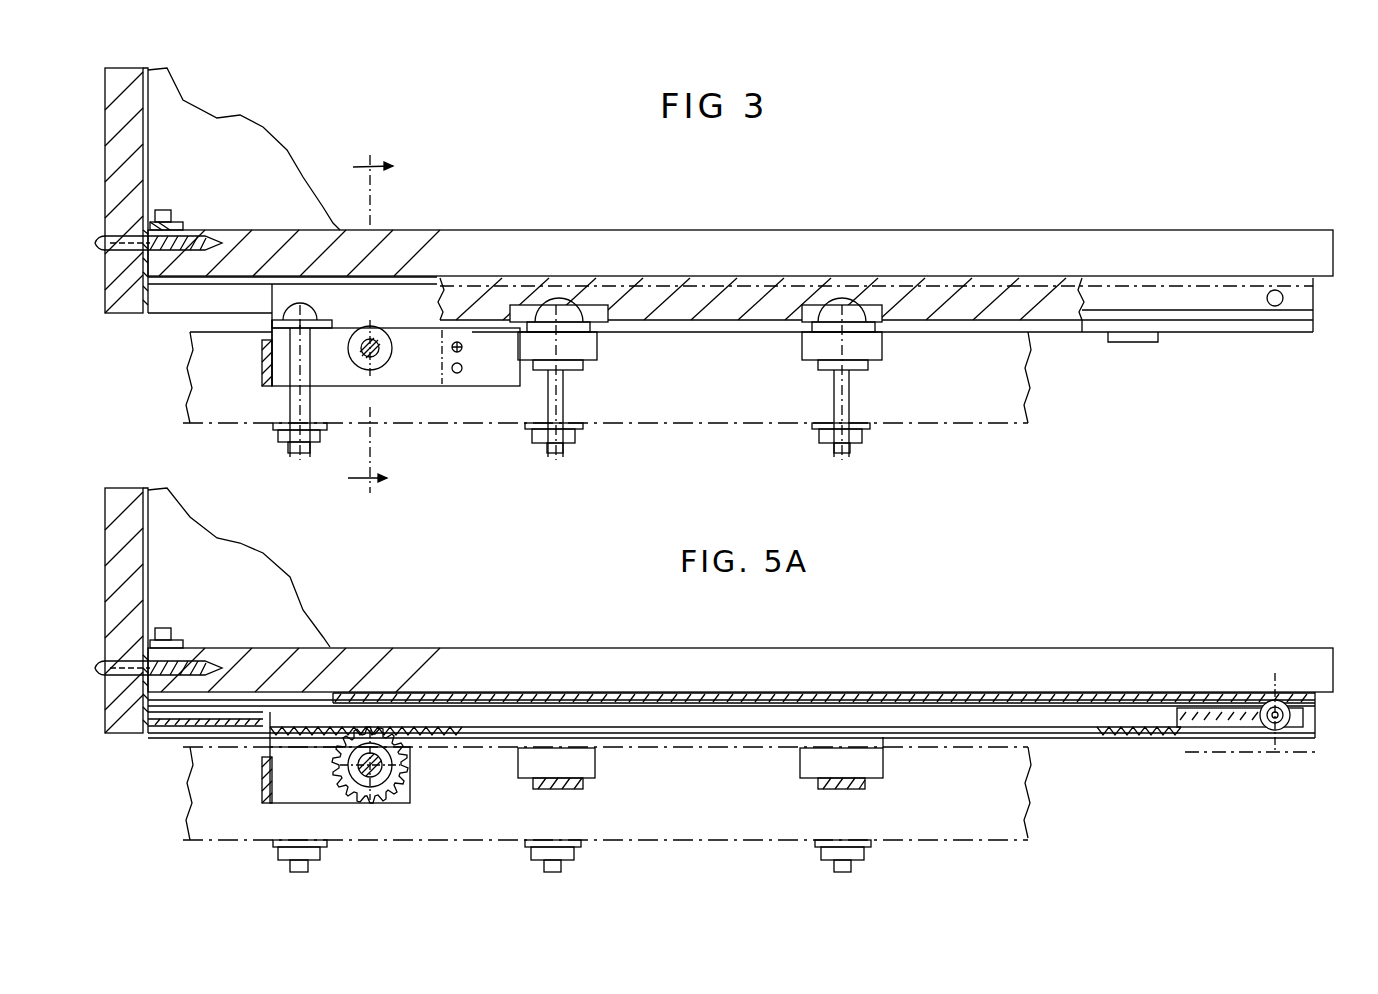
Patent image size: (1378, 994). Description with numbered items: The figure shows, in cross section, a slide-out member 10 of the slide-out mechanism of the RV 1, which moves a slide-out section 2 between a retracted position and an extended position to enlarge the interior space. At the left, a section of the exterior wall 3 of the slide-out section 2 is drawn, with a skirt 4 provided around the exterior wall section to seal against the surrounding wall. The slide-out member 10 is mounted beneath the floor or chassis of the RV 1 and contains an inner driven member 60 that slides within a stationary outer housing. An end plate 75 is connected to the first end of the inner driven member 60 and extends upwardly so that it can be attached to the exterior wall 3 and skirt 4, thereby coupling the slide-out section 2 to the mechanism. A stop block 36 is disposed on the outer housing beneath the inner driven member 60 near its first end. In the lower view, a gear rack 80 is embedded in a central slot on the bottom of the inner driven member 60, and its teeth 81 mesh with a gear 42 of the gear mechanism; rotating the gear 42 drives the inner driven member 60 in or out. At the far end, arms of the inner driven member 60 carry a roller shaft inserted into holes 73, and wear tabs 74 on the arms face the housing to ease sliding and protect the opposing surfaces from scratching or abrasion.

In FIG. 3, the RV 1 is at (972, 390).
In FIG. 3, the slide-out section 2 is at (208, 168).
In FIG. 5A, the slide-out section 2 is at (215, 604).
In FIG. 3, the exterior wall 3 is at (122, 107).
In FIG. 5A, the exterior wall 3 is at (127, 510).
In FIG. 3, the skirt 4 is at (356, 324).
In FIG. 3, the slide-out member 10 is at (247, 330).
In FIG. 3, the stop block 36 is at (457, 373).
In FIG. 5A, the gear 42 is at (387, 790).
In FIG. 3, the inner driven member 60 is at (1093, 325).
In FIG. 5A, the inner driven member 60 is at (1133, 747).
In FIG. 5A, the holes 73 is at (1267, 707).
In FIG. 3, the wear tabs 74 is at (1283, 297).
In FIG. 3, the end plate 75 is at (145, 313).
In FIG. 5A, the end plate 75 is at (140, 730).
In FIG. 5A, the gear rack 80 is at (420, 717).
In FIG. 5A, the teeth 81 is at (460, 730).